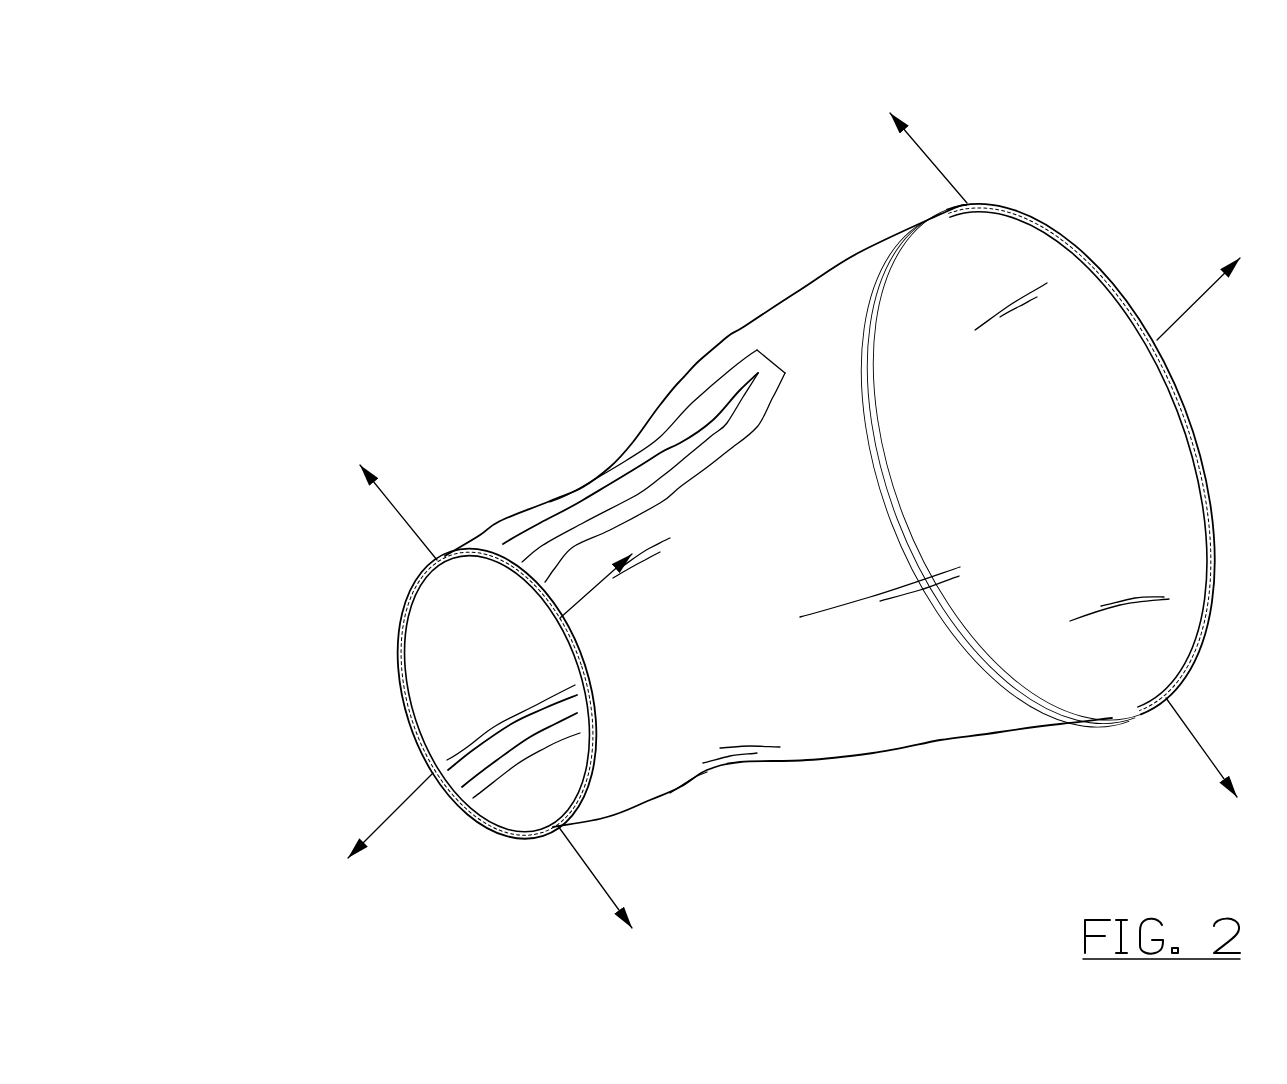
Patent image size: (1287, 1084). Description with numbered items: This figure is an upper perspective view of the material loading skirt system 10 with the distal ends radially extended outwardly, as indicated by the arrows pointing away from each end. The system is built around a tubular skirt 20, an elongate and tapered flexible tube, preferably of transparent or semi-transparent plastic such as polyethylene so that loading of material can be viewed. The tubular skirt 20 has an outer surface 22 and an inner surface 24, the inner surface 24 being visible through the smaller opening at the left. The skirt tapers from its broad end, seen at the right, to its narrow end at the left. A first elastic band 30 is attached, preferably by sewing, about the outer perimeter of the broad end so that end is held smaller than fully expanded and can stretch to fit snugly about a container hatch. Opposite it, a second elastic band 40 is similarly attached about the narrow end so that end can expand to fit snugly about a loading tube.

The material loading skirt system 10 is at (387, 307).
The tubular skirt 20 is at (810, 733).
The outer surface 22 is at (763, 333).
The inner surface 24 is at (472, 665).
The first elastic band 30 is at (1082, 256).
The second elastic band 40 is at (400, 623).